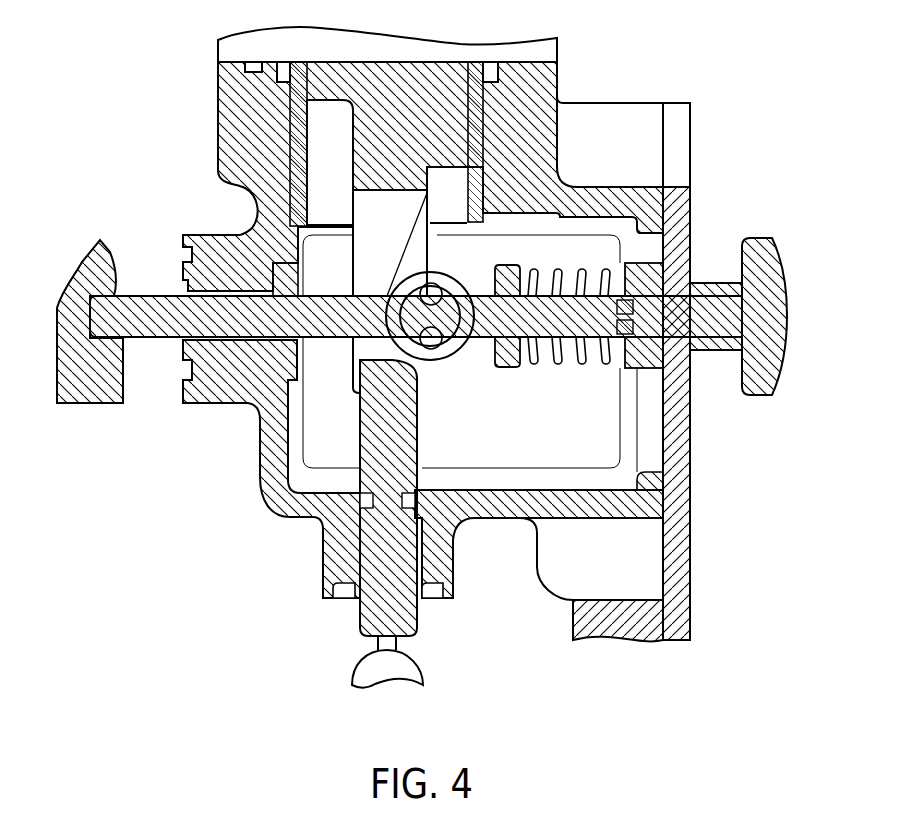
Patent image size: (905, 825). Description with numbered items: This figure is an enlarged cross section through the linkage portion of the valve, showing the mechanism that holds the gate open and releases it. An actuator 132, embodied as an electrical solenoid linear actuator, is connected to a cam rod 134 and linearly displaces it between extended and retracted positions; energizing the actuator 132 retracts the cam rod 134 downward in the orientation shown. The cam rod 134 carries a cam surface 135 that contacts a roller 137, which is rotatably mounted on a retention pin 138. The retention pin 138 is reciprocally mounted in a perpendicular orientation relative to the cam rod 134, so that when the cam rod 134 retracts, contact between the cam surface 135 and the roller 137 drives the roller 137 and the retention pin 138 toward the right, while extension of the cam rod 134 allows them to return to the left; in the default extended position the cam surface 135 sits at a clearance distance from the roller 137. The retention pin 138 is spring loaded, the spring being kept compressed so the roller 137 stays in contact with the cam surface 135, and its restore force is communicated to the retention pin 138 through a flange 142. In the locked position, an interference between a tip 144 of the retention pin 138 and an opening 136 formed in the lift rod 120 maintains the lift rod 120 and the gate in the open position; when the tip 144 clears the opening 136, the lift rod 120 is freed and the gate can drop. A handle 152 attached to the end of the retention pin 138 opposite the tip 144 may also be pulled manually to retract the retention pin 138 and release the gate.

The lift rod 120 is at (96, 259).
The actuator 132 is at (410, 667).
The cam rod 134 is at (401, 76).
The cam surface 135 is at (415, 254).
The opening 136 is at (111, 336).
The roller 137 is at (466, 268).
The retention pin 138 is at (686, 310).
The flange 142 is at (508, 362).
The tip 144 is at (82, 315).
The handle 152 is at (758, 258).